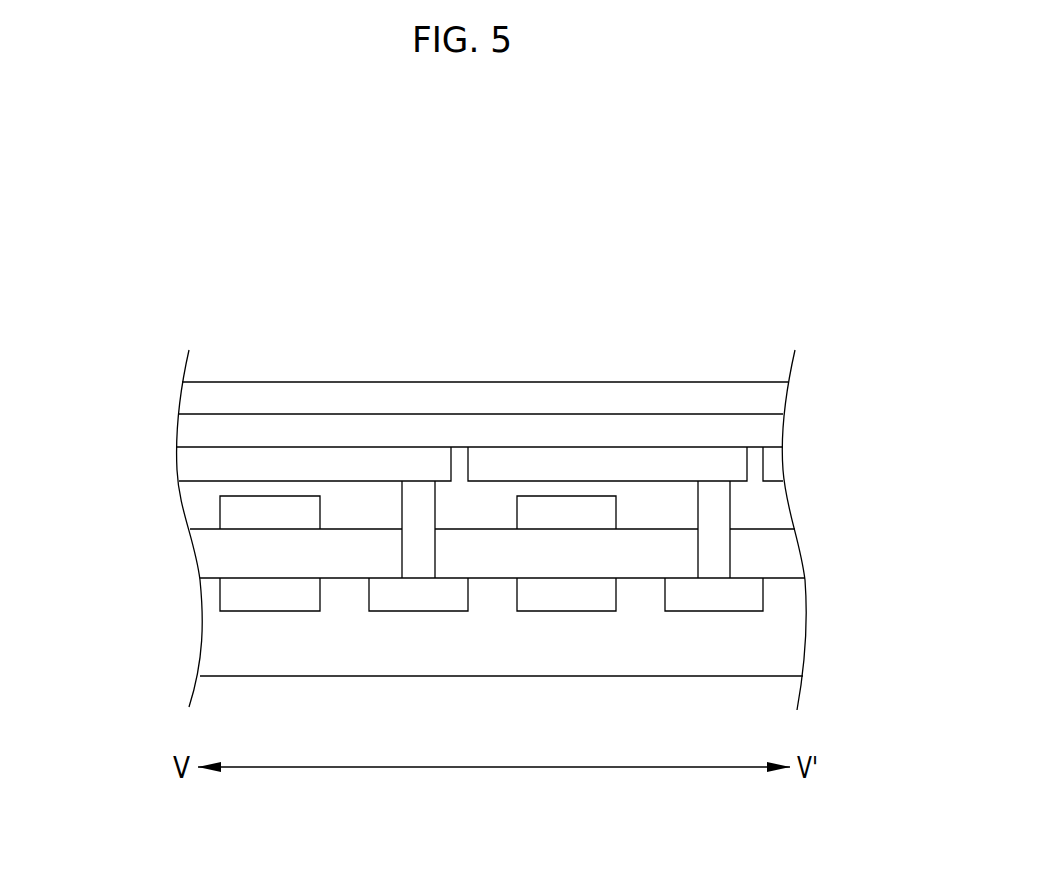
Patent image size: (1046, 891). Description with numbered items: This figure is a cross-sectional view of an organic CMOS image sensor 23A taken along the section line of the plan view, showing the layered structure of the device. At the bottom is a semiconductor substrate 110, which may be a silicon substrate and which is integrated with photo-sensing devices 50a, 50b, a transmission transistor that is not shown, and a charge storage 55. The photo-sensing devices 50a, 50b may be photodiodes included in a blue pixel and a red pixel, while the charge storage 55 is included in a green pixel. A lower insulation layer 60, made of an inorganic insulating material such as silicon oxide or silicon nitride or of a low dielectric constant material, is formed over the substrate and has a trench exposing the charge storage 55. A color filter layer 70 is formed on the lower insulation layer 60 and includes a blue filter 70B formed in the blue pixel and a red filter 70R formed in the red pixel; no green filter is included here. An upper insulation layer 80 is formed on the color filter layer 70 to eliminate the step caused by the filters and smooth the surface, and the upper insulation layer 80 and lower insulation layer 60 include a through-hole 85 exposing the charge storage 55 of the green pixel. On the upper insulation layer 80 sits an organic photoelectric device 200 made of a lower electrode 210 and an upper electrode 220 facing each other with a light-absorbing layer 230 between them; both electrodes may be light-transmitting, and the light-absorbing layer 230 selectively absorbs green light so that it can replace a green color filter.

The organic CMOS image sensor 23A is at (763, 277).
The organic photoelectric device 200 is at (416, 430).
The upper electrode 220 is at (188, 398).
The light-absorbing layer 230 is at (188, 431).
The lower electrode 210 is at (447, 470).
The upper insulation layer 80 is at (775, 503).
The through-hole 85 is at (698, 508).
The lower insulation layer 60 is at (775, 553).
The semiconductor substrate 110 is at (775, 630).
The color filter layer 70 is at (418, 396).
The blue filter 70B is at (276, 509).
The red filter 70R is at (566, 422).
The photo-sensing device 50a is at (267, 593).
The photo-sensing device 50b is at (567, 593).
The charge storage 55 is at (414, 595).